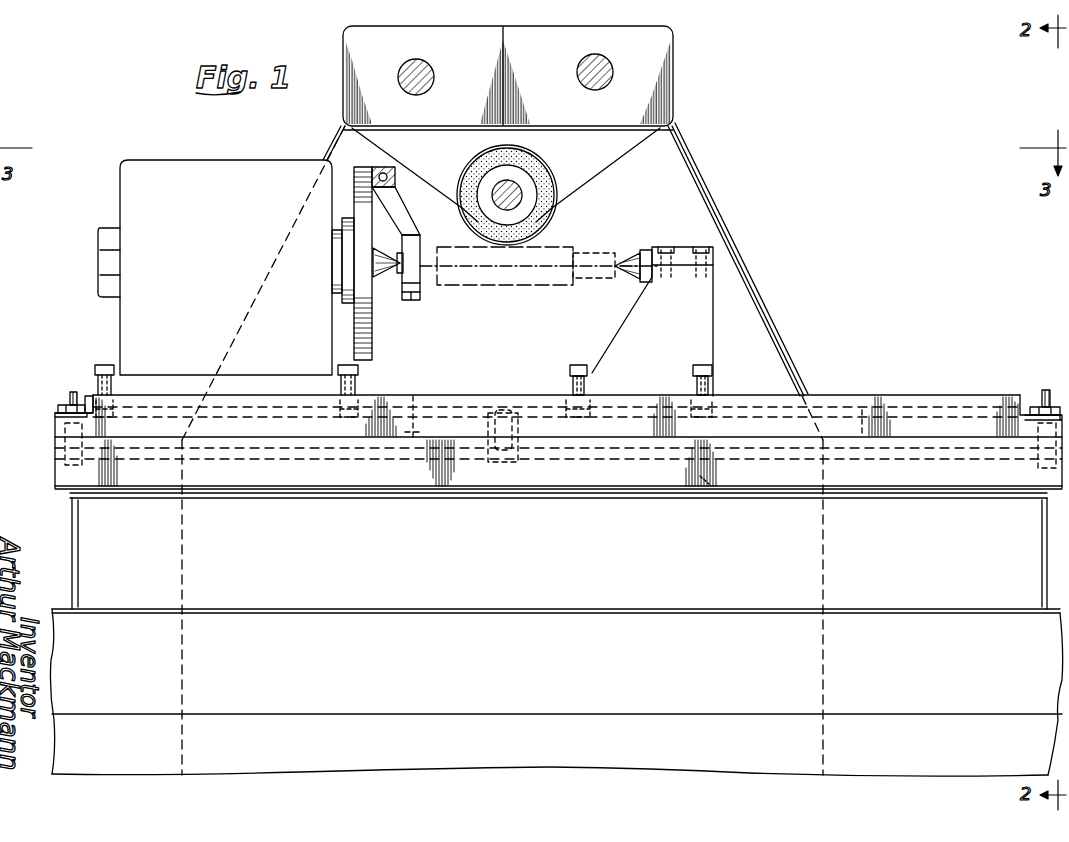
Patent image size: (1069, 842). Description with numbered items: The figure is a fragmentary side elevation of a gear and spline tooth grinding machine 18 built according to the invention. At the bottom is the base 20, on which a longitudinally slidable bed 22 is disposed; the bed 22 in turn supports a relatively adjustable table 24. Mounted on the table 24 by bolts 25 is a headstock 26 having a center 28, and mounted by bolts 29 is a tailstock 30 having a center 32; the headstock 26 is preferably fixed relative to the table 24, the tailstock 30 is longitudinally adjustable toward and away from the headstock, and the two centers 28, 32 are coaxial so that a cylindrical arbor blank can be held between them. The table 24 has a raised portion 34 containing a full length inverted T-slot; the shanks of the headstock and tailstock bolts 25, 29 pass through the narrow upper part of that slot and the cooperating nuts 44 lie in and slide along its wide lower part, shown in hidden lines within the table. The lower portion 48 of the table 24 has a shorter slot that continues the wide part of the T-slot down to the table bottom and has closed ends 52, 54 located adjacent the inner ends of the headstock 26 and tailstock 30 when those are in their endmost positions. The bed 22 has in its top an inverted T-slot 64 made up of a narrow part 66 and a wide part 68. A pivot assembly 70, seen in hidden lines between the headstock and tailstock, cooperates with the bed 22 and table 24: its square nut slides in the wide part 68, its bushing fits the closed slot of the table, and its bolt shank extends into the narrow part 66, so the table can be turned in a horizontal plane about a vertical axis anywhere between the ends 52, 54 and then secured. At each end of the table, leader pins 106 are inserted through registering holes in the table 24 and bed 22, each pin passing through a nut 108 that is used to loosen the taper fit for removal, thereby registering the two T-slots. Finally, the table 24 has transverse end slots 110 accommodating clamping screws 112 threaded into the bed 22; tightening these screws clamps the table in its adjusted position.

The gear and spline tooth grinding machine 18 is at (722, 135).
The base 20 is at (668, 756).
The bed 22 is at (80, 512).
The table 24 is at (842, 392).
The bolts 25 is at (95, 366).
The headstock 26 is at (120, 330).
The center 28 is at (382, 288).
The bolts 29 is at (580, 364).
The tailstock 30 is at (716, 300).
The center 32 is at (644, 250).
The raised portion 34 is at (88, 396).
The nuts 44 is at (110, 418).
The lower portion 48 is at (54, 424).
The closed end 52 is at (420, 432).
The closed end 54 is at (860, 425).
The inverted T-slot 64 is at (898, 470).
The narrow part 66 is at (728, 484).
The wide part 68 is at (770, 452).
The pivot assembly 70 is at (522, 428).
The leader pins 106 is at (70, 395).
The nut 108 is at (62, 405).
The transverse end slots 110 is at (1015, 428).
The clamping screws 112 is at (55, 414).